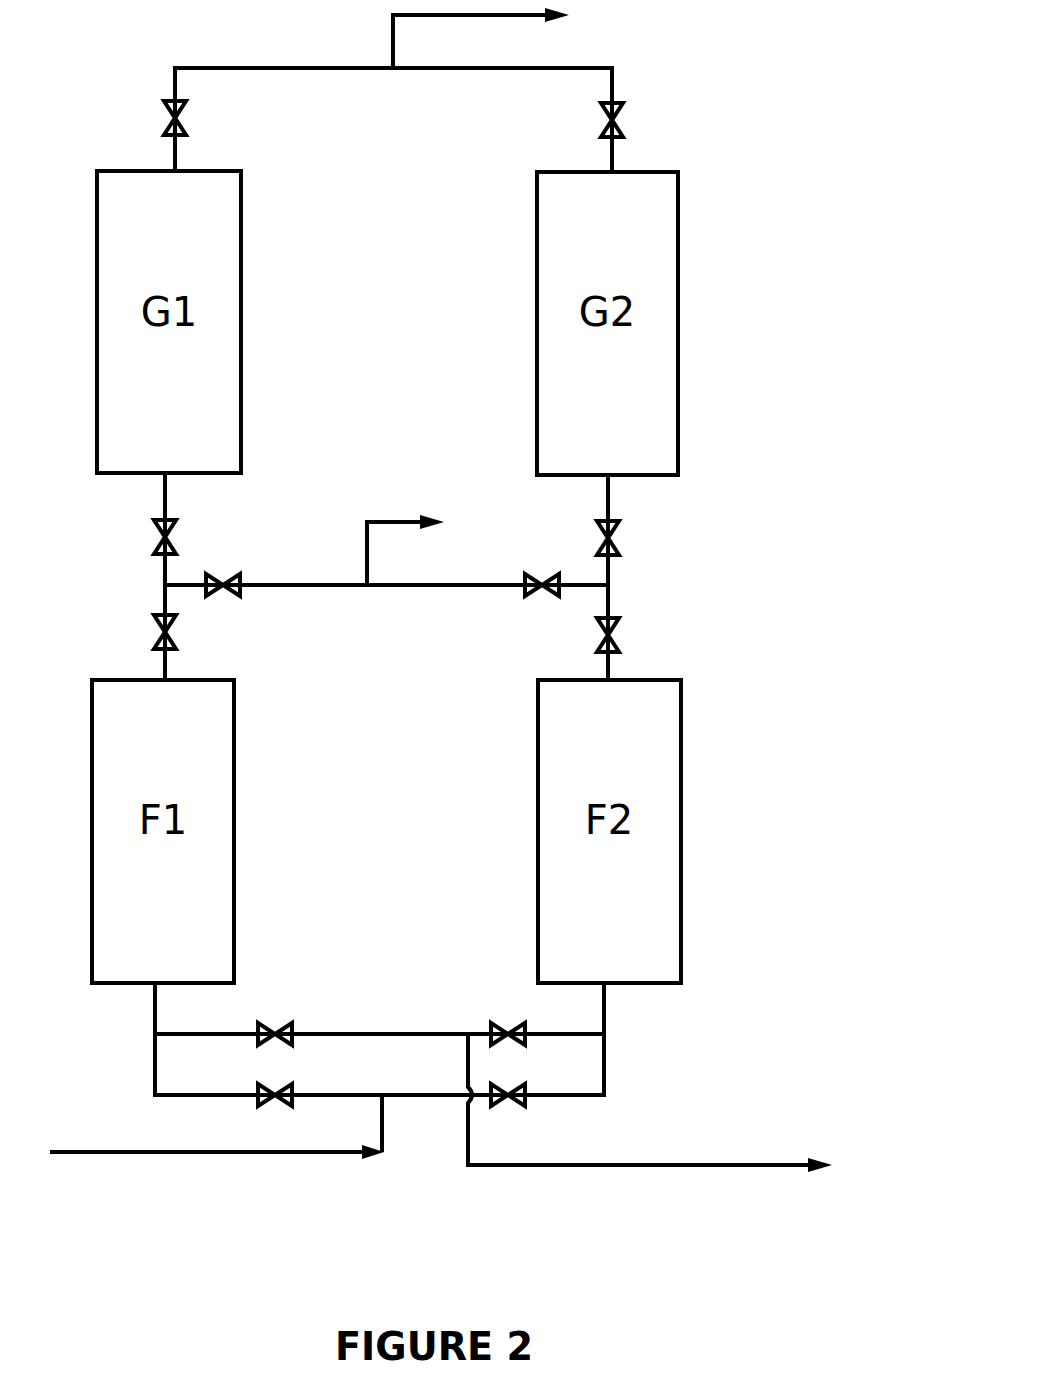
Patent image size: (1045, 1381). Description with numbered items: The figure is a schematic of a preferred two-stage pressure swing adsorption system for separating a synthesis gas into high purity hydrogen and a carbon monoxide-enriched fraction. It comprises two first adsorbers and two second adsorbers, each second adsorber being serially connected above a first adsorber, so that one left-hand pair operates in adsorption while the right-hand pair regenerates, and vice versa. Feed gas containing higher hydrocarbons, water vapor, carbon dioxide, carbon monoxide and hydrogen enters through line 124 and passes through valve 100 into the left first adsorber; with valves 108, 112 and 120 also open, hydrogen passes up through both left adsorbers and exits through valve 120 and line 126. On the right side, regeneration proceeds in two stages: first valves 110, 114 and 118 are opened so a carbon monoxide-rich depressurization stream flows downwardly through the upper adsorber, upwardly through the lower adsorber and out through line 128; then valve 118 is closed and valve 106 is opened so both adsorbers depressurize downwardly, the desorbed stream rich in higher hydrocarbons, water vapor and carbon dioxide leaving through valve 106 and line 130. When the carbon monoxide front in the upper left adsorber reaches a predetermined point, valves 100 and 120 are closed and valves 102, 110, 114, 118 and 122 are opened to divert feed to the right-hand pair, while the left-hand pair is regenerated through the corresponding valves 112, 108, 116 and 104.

The valve 100 is at (275, 1110).
The valve 102 is at (510, 1110).
The valve 104 is at (274, 1020).
The valve 106 is at (506, 1020).
The valve 108 is at (148, 636).
The valve 110 is at (624, 634).
The valve 112 is at (148, 540).
The valve 114 is at (624, 535).
The valve 116 is at (226, 600).
The valve 118 is at (540, 600).
The valve 120 is at (190, 119).
The valve 122 is at (598, 122).
The line 124 is at (166, 1156).
The line 126 is at (398, 48).
The line 128 is at (394, 515).
The line 130 is at (633, 1168).